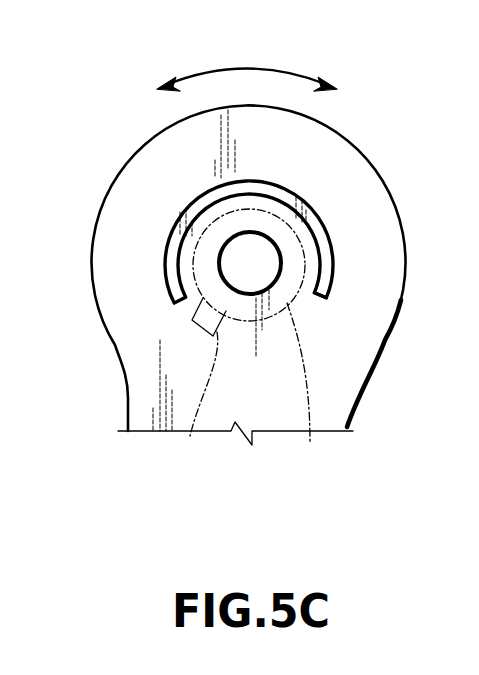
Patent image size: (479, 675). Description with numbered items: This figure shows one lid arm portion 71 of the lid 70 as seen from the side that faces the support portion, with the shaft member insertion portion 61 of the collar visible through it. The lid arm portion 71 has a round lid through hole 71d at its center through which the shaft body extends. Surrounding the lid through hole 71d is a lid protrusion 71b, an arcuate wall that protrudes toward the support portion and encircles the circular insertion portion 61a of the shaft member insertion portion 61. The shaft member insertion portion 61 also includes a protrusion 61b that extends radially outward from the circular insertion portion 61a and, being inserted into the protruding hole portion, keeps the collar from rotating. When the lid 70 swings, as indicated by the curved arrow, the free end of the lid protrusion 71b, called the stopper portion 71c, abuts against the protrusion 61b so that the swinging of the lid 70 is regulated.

The lid 70 is at (267, 244).
The lid arm portion 71 is at (340, 131).
The lid protrusion 71b is at (321, 220).
The stopper portion 71c is at (312, 299).
The lid through hole 71d is at (226, 248).
The shaft member insertion portion 61 is at (235, 414).
The circular insertion portion 61a is at (311, 390).
The protrusion 61b is at (196, 405).